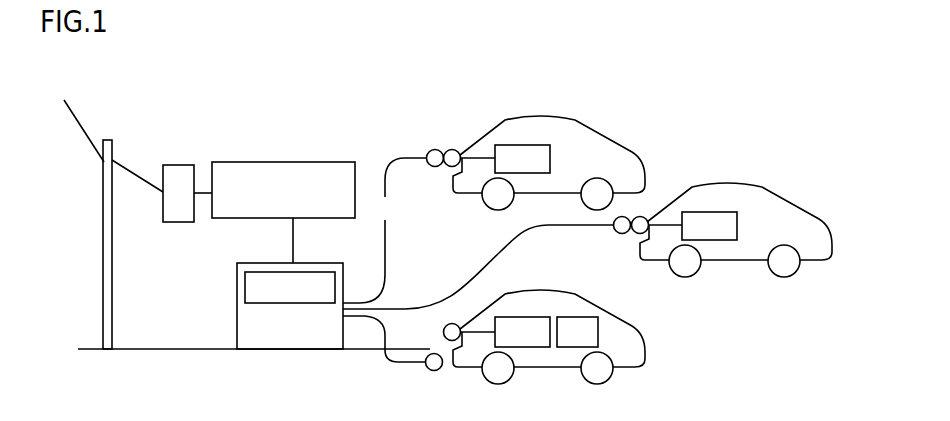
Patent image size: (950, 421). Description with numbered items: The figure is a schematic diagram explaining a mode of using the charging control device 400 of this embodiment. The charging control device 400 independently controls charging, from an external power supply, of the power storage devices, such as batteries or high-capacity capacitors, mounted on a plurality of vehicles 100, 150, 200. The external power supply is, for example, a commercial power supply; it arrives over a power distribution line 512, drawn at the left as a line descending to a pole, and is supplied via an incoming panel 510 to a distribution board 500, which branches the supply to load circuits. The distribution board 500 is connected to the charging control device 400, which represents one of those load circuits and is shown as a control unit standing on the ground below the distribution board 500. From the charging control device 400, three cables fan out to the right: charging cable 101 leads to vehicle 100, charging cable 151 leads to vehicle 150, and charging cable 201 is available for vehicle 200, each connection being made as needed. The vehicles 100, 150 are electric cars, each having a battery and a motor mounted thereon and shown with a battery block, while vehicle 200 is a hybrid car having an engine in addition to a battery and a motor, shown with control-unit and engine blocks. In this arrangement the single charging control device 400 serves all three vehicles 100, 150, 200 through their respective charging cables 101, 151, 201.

The vehicle 100 is at (536, 117).
The charging cable 101 is at (402, 156).
The vehicle 150 is at (722, 183).
The charging cable 151 is at (496, 257).
The vehicle 200 is at (645, 344).
The charging cable 201 is at (410, 368).
The charging control device 400 is at (237, 313).
The distribution board 500 is at (291, 161).
The incoming panel 510 is at (178, 223).
The power distribution line 512 is at (79, 119).